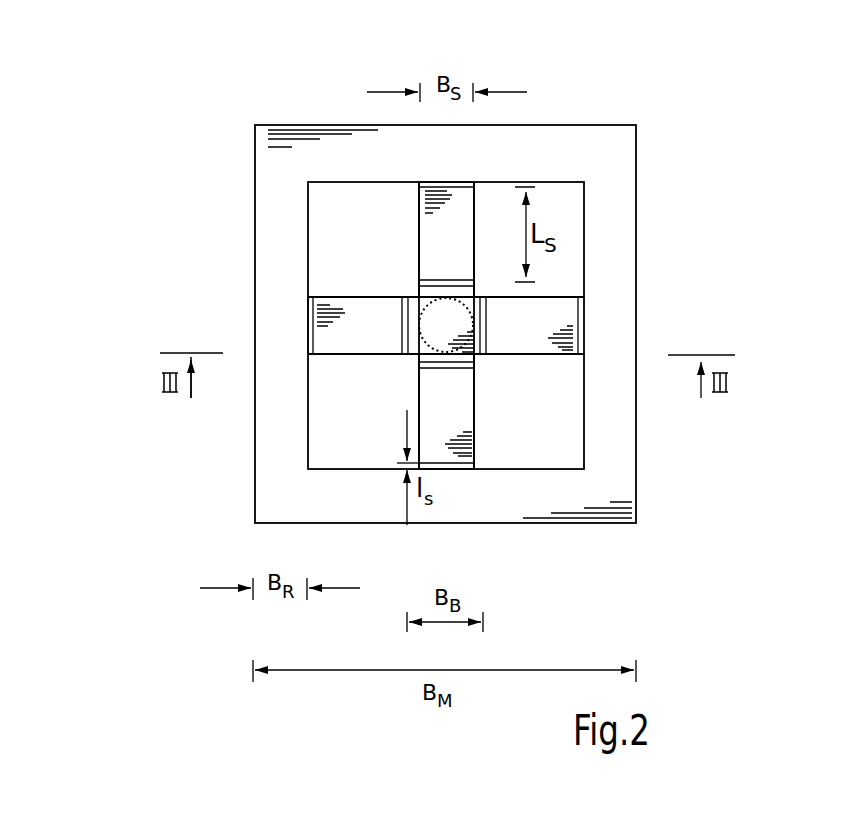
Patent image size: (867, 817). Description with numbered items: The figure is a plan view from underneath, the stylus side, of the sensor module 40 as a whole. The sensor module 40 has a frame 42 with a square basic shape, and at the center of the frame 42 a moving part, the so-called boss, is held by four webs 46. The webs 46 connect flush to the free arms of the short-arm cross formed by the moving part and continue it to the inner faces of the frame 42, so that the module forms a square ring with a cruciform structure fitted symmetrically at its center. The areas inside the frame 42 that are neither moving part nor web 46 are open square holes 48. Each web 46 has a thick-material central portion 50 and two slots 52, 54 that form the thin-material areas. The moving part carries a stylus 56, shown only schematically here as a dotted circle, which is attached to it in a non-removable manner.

The sensor module 40 is at (443, 271).
The frame 42 is at (622, 197).
The web 46 is at (368, 325).
The hole 48 is at (537, 427).
The thick-material central portion 50 is at (370, 311).
The slot 52 is at (308, 328).
The slot 54 is at (405, 350).
The stylus 56 is at (438, 321).